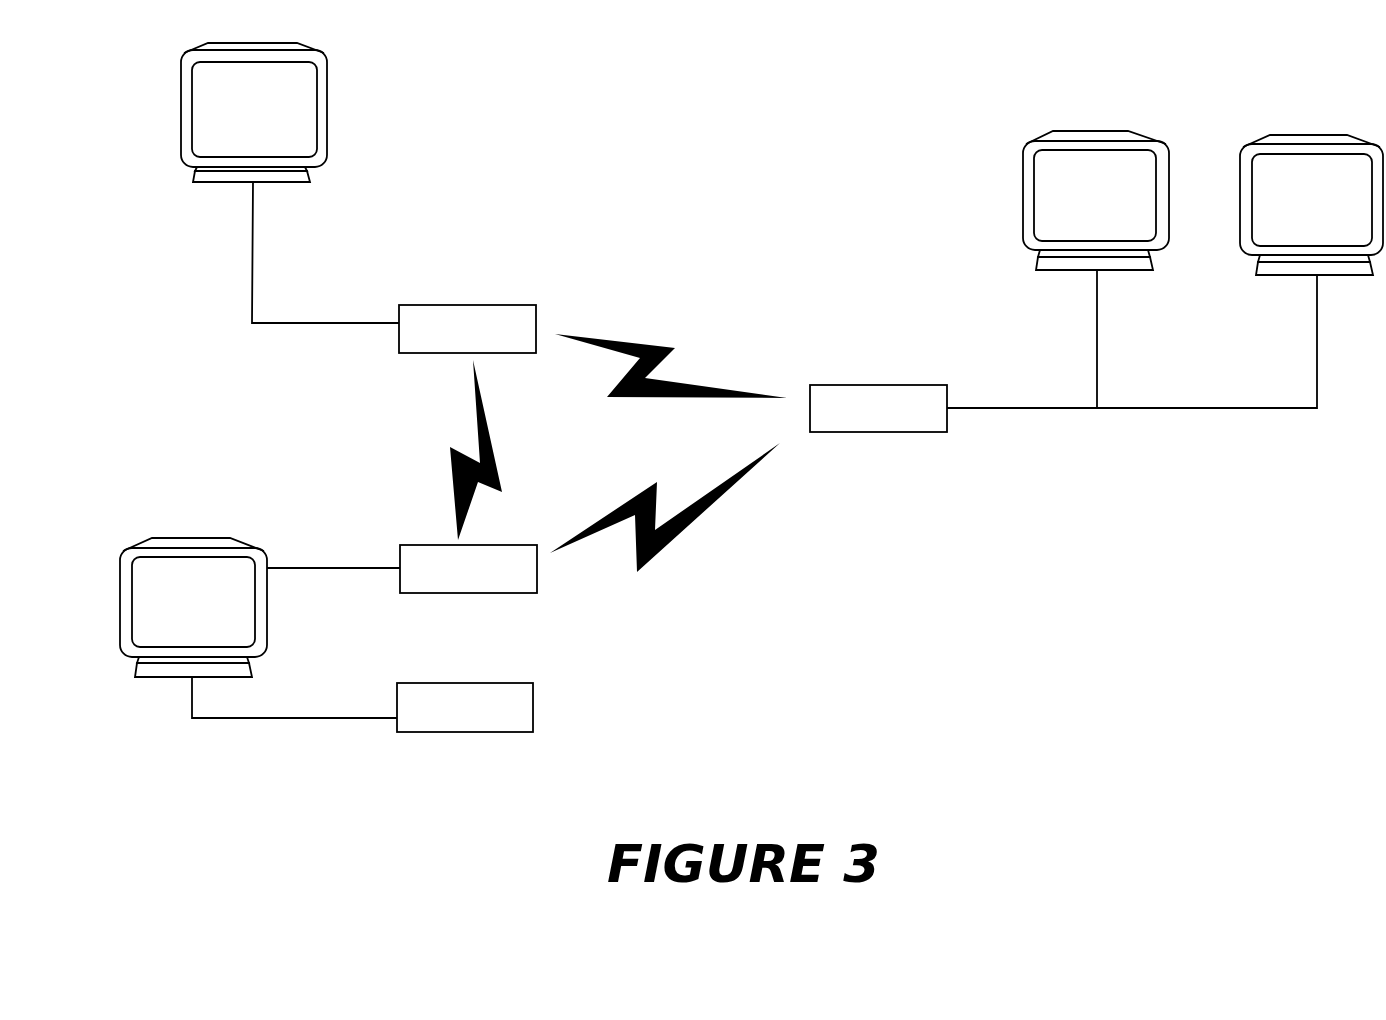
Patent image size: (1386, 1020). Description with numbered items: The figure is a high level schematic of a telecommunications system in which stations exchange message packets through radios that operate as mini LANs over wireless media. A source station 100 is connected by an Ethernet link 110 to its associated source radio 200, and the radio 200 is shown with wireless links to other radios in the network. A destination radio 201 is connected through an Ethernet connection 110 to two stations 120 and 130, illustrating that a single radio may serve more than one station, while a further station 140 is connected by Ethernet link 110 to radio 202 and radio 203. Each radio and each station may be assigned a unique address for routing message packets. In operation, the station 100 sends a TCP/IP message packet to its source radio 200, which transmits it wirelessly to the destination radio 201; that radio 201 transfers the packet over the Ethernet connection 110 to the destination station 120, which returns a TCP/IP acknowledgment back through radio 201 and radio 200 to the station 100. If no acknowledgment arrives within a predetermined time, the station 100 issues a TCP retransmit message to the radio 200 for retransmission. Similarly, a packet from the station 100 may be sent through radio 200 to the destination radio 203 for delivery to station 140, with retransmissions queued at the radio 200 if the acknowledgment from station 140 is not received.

The station 100 is at (254, 112).
The Ethernet link 110 is at (252, 217).
The station 120 is at (1096, 200).
The station 130 is at (1311, 205).
The station 140 is at (193, 607).
The radio 200 is at (467, 329).
The radio 201 is at (878, 408).
The radio 202 is at (468, 569).
The radio 203 is at (465, 707).